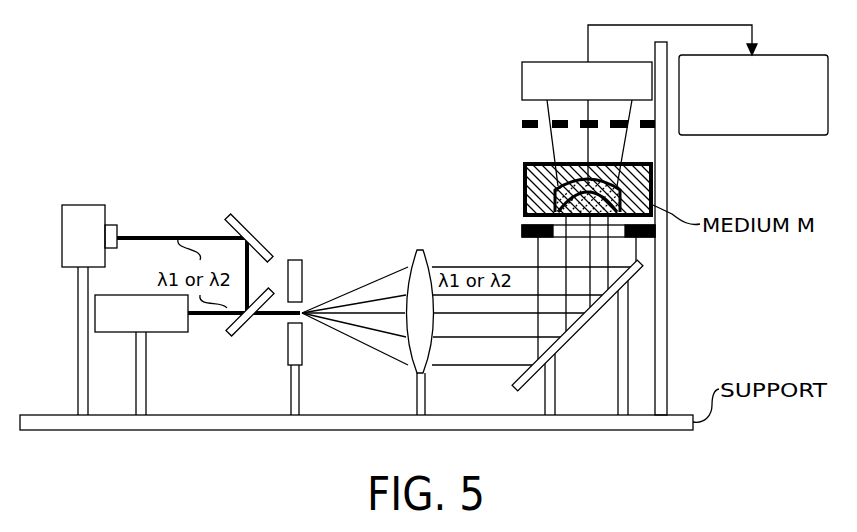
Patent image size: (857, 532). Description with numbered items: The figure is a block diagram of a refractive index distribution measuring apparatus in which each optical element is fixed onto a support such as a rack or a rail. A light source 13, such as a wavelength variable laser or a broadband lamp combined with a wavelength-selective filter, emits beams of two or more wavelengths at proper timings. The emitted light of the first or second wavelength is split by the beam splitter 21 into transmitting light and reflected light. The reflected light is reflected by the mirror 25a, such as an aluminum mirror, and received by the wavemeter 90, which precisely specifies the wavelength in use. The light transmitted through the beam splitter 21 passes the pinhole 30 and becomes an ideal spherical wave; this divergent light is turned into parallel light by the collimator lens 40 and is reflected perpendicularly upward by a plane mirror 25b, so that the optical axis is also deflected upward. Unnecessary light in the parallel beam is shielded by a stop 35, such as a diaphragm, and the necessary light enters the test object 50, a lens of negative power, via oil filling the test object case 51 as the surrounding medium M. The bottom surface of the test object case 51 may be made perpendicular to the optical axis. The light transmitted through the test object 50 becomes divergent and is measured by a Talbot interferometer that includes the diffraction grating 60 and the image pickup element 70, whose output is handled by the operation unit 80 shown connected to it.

The light source 13 is at (118, 295).
The beam splitter 21 is at (246, 324).
The mirror 25a is at (252, 202).
The plane mirror 25b is at (513, 376).
The pinhole 30 is at (310, 258).
The stop 35 is at (520, 227).
The collimator lens 40 is at (419, 250).
The test object 50 is at (642, 200).
The test object case 51 is at (523, 177).
The diffraction grating 60 is at (522, 124).
The image pickup element 70 is at (555, 62).
The operation unit 80 is at (787, 55).
The wavemeter 90 is at (97, 205).